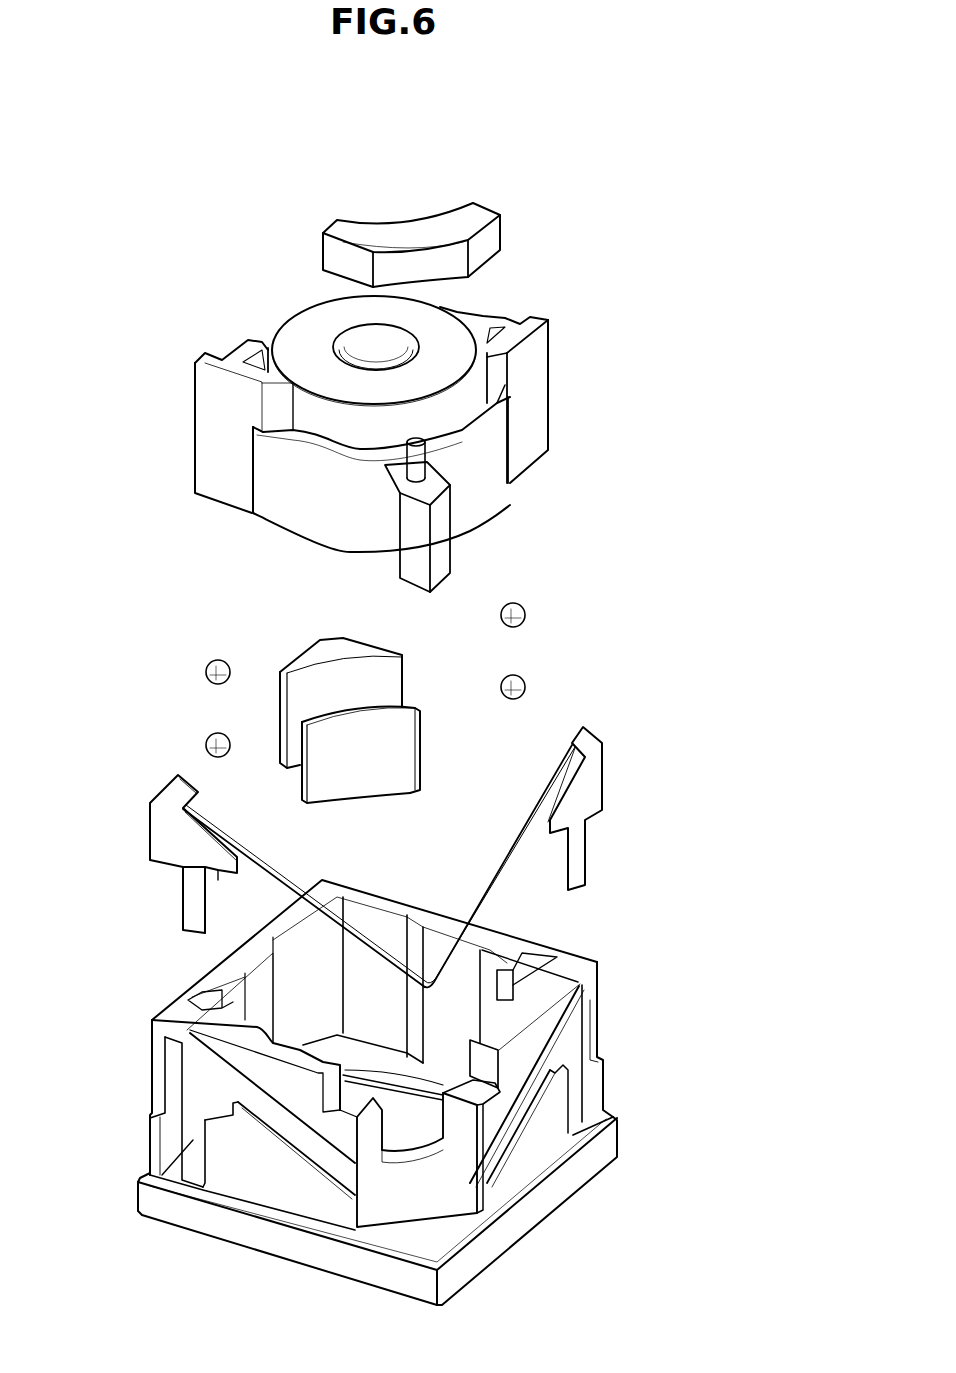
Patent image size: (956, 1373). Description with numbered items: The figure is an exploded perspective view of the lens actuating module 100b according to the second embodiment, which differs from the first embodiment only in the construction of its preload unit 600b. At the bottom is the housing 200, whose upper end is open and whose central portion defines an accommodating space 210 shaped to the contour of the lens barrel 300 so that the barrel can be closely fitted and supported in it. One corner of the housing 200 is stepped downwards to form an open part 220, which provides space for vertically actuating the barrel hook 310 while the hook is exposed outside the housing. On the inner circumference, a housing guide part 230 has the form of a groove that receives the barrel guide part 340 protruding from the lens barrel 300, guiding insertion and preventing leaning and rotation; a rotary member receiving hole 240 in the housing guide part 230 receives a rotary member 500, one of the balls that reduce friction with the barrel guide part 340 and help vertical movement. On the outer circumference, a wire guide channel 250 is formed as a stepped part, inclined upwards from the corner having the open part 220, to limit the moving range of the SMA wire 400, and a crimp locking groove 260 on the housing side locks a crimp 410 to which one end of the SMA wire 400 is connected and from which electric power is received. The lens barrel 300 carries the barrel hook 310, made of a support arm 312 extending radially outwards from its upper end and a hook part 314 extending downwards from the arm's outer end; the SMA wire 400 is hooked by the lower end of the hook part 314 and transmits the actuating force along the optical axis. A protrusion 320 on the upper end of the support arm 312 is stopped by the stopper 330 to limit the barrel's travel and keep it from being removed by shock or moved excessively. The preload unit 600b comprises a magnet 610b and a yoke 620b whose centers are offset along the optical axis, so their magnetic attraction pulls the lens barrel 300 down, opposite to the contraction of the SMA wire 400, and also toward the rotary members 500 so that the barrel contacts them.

The lens actuating module 100b is at (203, 115).
The housing 200 is at (157, 995).
The accommodating space 210 is at (403, 1010).
The open part 220 is at (443, 1125).
The housing guide part 230 is at (527, 958).
The rotary member receiving hole 240 is at (505, 968).
The wire guide channel 250 is at (290, 1132).
The crimp locking groove 260 is at (192, 1137).
The lens barrel 300 is at (219, 330).
The barrel hook 310 is at (605, 492).
The support arm 312 is at (433, 483).
The hook part 314 is at (440, 556).
The protrusion 320 is at (410, 465).
The stopper 330 is at (413, 232).
The barrel guide part 340 is at (533, 318).
The SMA wire 400 is at (509, 858).
The crimp 410 is at (592, 790).
The rotary member 500 is at (205, 672).
The preload unit 600b is at (642, 622).
The magnet 610b is at (380, 682).
The yoke 620b is at (390, 750).